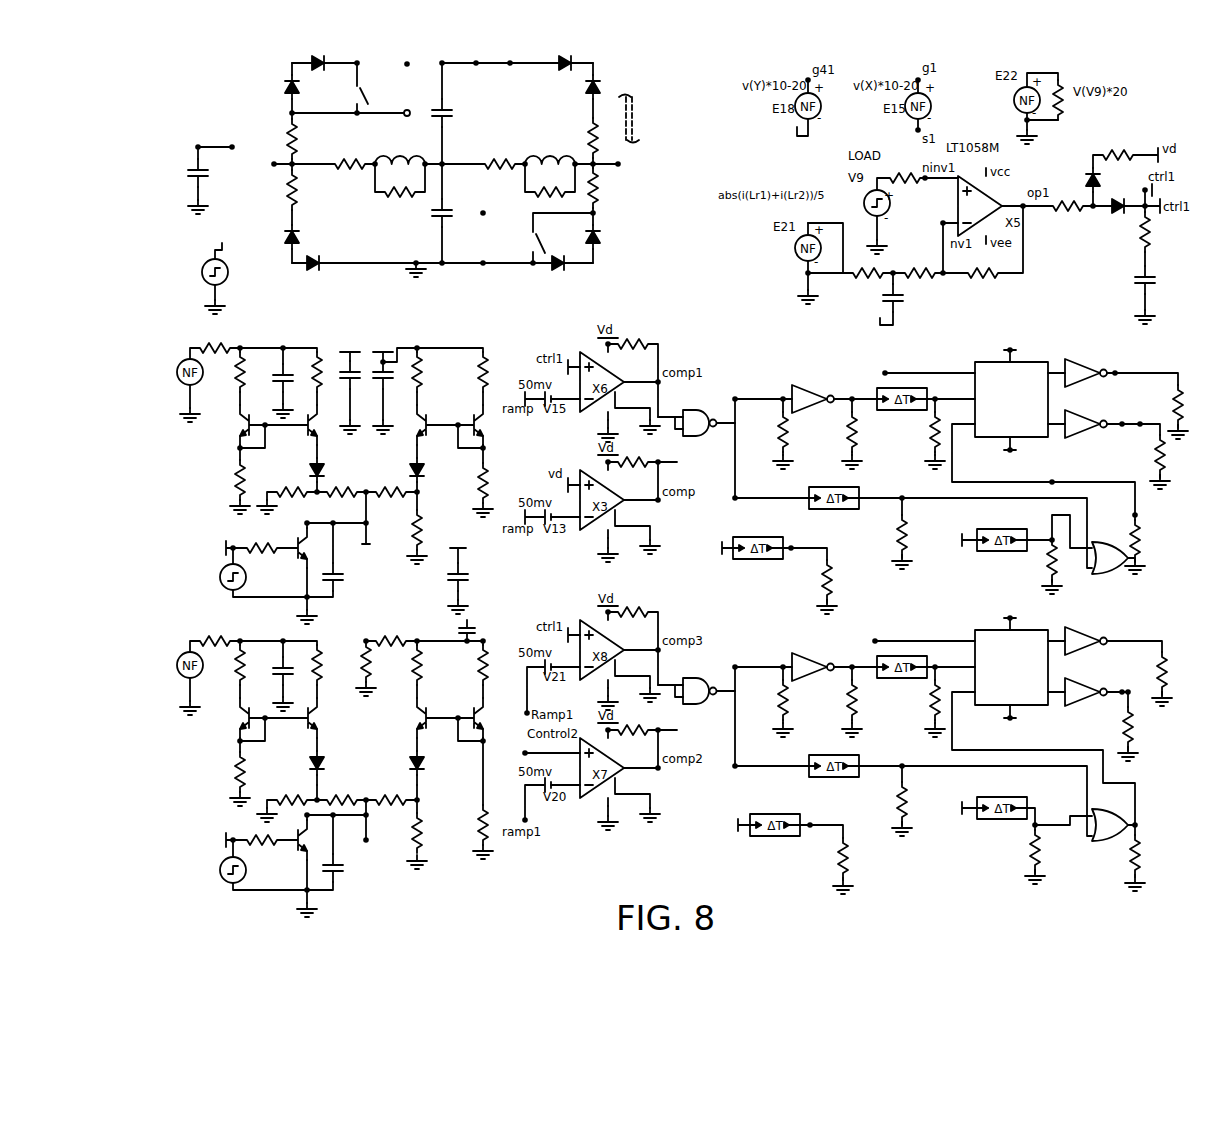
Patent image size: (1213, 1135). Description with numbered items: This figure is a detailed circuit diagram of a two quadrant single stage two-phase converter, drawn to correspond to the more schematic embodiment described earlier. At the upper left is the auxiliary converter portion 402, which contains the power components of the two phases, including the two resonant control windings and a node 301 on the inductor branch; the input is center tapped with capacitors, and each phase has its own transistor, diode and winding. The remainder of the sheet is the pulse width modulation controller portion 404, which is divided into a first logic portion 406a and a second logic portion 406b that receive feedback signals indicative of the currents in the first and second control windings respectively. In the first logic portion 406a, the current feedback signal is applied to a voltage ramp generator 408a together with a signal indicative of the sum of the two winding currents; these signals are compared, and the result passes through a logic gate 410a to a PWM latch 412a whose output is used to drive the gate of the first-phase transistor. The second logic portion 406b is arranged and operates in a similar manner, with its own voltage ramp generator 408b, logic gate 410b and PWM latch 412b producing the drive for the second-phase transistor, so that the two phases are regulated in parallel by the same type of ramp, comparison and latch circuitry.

The auxiliary converter portion 402 is at (247, 81).
The resonant inductor branch 301 is at (448, 163).
The pulse width modulation controller portion 404 is at (159, 396).
The first logic portion 406a is at (206, 497).
The second logic portion 406b is at (199, 762).
The voltage ramp generator 408a is at (401, 292).
The voltage ramp generator 408b is at (481, 614).
The logic gate 410a is at (704, 411).
The logic gate 410b is at (704, 679).
The PWM latch 412a is at (988, 360).
The PWM latch 412b is at (988, 628).